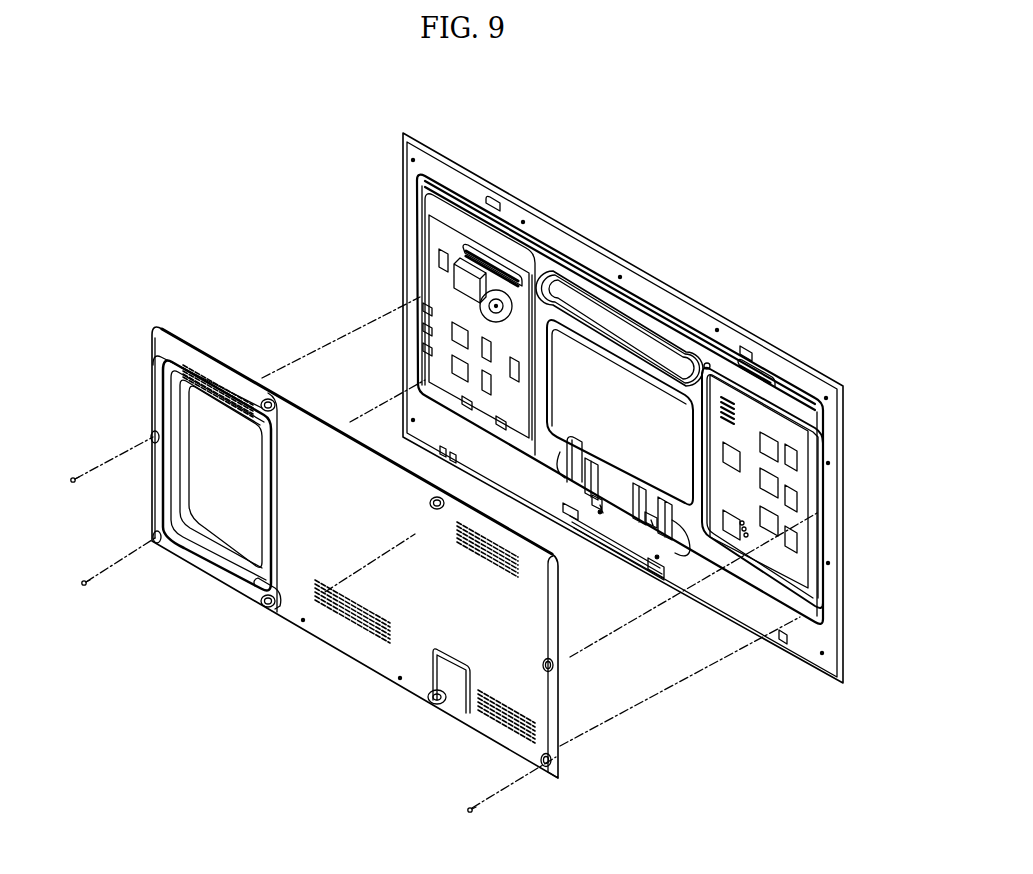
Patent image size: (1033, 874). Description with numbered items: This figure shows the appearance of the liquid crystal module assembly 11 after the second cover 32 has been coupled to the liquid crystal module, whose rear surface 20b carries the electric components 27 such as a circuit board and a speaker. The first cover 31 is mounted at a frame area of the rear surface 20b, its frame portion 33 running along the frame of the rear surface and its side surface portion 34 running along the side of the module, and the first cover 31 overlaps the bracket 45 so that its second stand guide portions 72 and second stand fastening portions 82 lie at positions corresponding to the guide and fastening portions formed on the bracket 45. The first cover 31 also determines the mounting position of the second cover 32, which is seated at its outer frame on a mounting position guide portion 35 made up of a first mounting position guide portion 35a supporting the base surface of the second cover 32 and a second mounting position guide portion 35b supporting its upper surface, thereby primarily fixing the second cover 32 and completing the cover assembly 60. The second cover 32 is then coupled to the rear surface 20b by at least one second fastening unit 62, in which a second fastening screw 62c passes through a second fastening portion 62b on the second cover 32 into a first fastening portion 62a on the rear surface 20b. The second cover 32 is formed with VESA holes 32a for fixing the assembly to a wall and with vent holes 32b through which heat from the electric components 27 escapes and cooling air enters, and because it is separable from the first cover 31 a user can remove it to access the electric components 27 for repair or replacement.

The liquid crystal module assembly 11 is at (640, 80).
The rear surface 20b is at (636, 328).
The electric components 27 is at (438, 237).
The first cover 31 is at (562, 165).
The second cover 32 is at (330, 647).
The VESA holes 32a is at (268, 402).
The vent holes 32b is at (232, 405).
The frame portion 33 is at (510, 218).
The side surface portion 34 is at (537, 220).
The mounting position guide portion 35 is at (753, 247).
The first mounting position guide portion 35a is at (672, 335).
The second mounting position guide portion 35b is at (660, 308).
The bracket 45 is at (573, 437).
The cover assembly 60 is at (283, 542).
The second fastening unit 62 is at (233, 227).
The first fastening portion 62a is at (422, 288).
The second fastening portion 62b is at (155, 433).
The second fastening screw 62c is at (73, 476).
The second stand guide portions 72 is at (590, 458).
The second stand fastening portions 82 is at (597, 496).